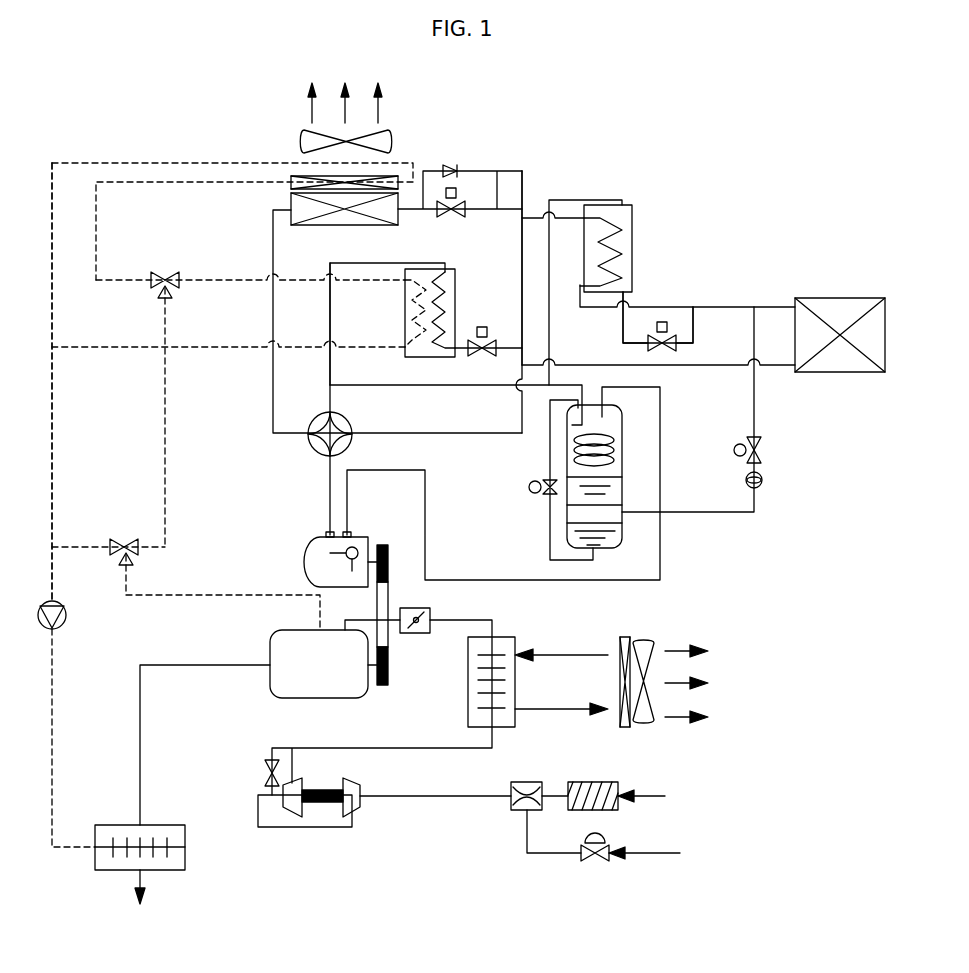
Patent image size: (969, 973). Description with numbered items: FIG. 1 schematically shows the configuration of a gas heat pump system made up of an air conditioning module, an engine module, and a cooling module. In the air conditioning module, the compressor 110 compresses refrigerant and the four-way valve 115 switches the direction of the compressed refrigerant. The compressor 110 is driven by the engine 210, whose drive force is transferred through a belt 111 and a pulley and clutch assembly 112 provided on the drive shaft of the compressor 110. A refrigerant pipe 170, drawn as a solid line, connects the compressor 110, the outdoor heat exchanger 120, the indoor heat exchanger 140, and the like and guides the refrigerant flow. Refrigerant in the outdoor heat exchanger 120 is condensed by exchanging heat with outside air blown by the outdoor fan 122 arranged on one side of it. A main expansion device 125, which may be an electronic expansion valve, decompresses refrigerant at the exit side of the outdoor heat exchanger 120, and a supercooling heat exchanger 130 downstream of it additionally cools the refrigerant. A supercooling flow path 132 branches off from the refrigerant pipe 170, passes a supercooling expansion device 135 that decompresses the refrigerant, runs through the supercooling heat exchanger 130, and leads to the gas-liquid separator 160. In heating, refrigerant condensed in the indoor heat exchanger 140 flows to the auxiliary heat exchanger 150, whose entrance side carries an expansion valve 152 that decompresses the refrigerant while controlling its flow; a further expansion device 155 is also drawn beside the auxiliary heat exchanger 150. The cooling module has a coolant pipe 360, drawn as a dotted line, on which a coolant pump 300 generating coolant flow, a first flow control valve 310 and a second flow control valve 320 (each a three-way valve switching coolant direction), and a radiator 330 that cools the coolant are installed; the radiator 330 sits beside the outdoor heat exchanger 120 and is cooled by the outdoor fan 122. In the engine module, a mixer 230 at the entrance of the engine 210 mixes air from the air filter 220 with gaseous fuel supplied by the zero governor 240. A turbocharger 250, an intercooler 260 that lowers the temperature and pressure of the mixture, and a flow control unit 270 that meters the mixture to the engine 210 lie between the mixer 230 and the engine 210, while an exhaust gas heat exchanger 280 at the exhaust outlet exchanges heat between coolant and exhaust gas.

The compressor 110 is at (368, 540).
The belt 111 is at (390, 612).
The pulley and clutch assembly 112 is at (390, 562).
The four-way valve 115 is at (352, 426).
The outdoor heat exchanger 120 is at (291, 200).
The outdoor fan 122 is at (302, 138).
The main expansion device 125 is at (448, 190).
The supercooling heat exchanger 130 is at (632, 210).
The supercooling flow path 132 is at (623, 325).
The supercooling expansion device 135 is at (676, 332).
The indoor heat exchanger 140 is at (830, 298).
The auxiliary heat exchanger 150 is at (405, 314).
The expansion valve 152 is at (330, 370).
The expansion valve 155 is at (483, 328).
The gas-liquid separator 160 is at (622, 462).
The refrigerant pipe 170 is at (522, 180).
The engine 210 is at (272, 695).
The air filter 220 is at (596, 782).
The mixer 230 is at (520, 811).
The zero governor 240 is at (600, 862).
The turbocharger 250 is at (358, 826).
The intercooler 260 is at (468, 726).
The flow control unit 270 is at (430, 616).
The exhaust gas heat exchanger 280 is at (187, 856).
The coolant pump 300 is at (62, 630).
The first flow control valve 310 is at (138, 556).
The second flow control valve 320 is at (165, 270).
The radiator 330 is at (291, 180).
The coolant pipe 360 is at (54, 446).